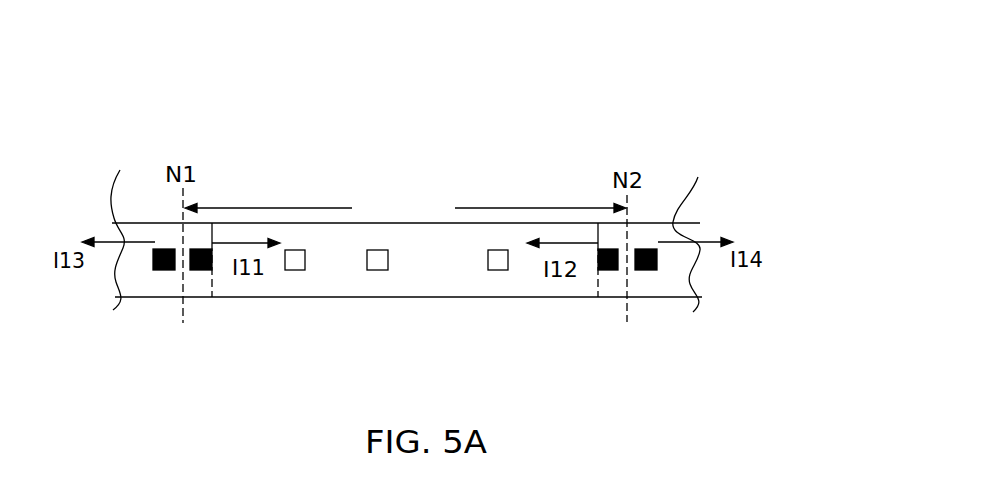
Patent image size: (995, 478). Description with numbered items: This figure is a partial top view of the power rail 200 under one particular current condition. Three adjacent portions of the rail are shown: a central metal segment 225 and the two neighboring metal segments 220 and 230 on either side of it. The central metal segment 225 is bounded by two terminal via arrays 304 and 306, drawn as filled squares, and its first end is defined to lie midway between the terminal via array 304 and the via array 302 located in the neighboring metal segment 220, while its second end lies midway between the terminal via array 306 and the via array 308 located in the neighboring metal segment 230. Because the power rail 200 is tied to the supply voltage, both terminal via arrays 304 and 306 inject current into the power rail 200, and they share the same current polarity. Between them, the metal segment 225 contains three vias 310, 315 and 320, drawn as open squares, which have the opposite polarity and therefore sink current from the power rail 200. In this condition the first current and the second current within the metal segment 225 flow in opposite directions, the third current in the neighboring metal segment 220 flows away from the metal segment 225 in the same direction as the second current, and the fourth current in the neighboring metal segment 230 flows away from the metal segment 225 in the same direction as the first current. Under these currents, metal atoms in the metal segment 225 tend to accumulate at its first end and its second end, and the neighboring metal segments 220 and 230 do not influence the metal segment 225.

The power rail 200 is at (248, 60).
The metal segment 220 is at (113, 223).
The metal segment 225 is at (405, 204).
The metal segment 230 is at (695, 230).
The via array 302 is at (157, 270).
The terminal via array 304 is at (198, 270).
The terminal via array 306 is at (610, 270).
The via array 308 is at (647, 270).
The via 310 is at (295, 270).
The via 315 is at (377, 270).
The via 320 is at (498, 270).